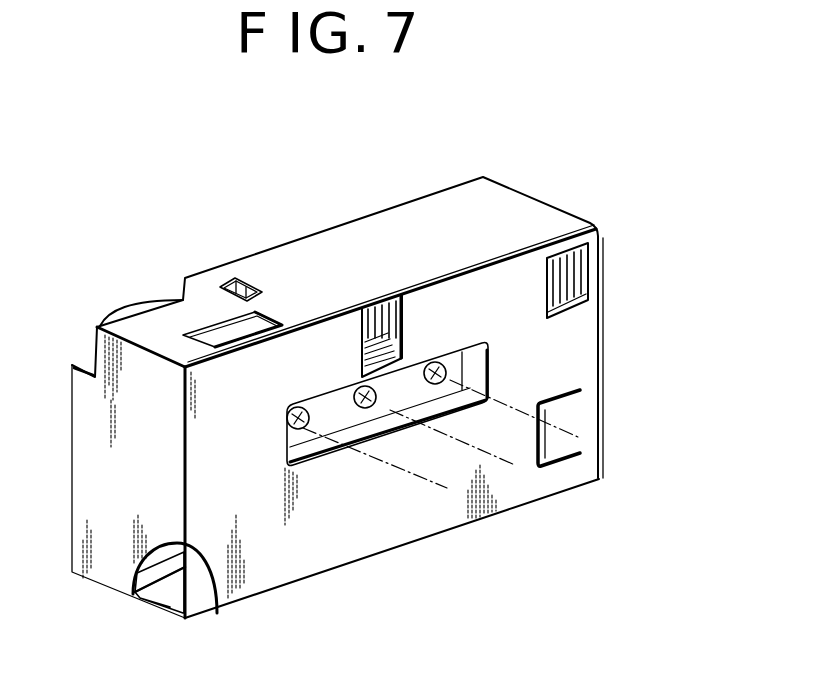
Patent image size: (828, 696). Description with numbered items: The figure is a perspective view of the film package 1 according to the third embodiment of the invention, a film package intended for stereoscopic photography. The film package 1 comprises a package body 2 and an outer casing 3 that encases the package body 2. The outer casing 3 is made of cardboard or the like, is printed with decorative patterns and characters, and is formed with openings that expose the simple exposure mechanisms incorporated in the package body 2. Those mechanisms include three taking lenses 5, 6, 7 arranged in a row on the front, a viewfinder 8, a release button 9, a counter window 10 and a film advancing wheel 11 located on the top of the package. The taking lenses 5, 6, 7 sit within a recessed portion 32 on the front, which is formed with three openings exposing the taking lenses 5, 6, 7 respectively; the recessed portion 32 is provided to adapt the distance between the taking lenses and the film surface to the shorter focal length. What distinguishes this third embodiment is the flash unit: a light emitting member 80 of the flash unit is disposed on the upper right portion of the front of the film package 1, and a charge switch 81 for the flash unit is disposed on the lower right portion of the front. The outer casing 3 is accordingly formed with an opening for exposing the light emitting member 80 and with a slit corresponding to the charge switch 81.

The film package 1 is at (528, 189).
The package body 2 is at (197, 608).
The outer casing 3 is at (102, 587).
The taking lens 5 is at (304, 432).
The taking lens 6 is at (378, 408).
The taking lens 7 is at (446, 385).
The viewfinder 8 is at (403, 322).
The release button 9 is at (267, 316).
The counter window 10 is at (242, 287).
The film advancing wheel 11 is at (140, 302).
The recessed portion 32 is at (460, 369).
The light emitting member 80 is at (589, 270).
The charge switch 81 is at (566, 458).